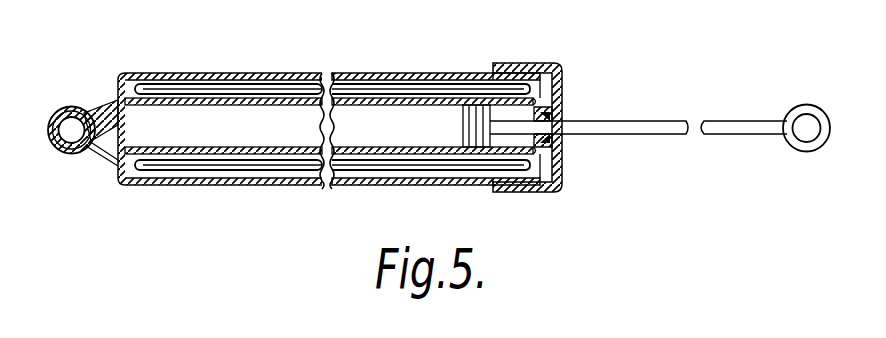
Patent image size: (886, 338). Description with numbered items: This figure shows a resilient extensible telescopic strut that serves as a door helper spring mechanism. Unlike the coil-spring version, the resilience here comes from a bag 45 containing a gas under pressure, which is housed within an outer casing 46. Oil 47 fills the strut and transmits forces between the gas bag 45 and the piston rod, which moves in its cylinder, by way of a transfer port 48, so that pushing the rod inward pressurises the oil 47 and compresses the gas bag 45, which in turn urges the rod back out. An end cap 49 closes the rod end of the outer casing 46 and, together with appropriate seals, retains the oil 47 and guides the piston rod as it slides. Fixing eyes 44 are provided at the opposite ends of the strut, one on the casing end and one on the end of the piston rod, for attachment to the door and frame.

The fixing eye 44 is at (61, 109).
The bag 45 is at (213, 176).
The outer casing 46 is at (228, 73).
The oil 47 is at (143, 115).
The transfer port 48 is at (120, 173).
The end cap 49 is at (565, 99).